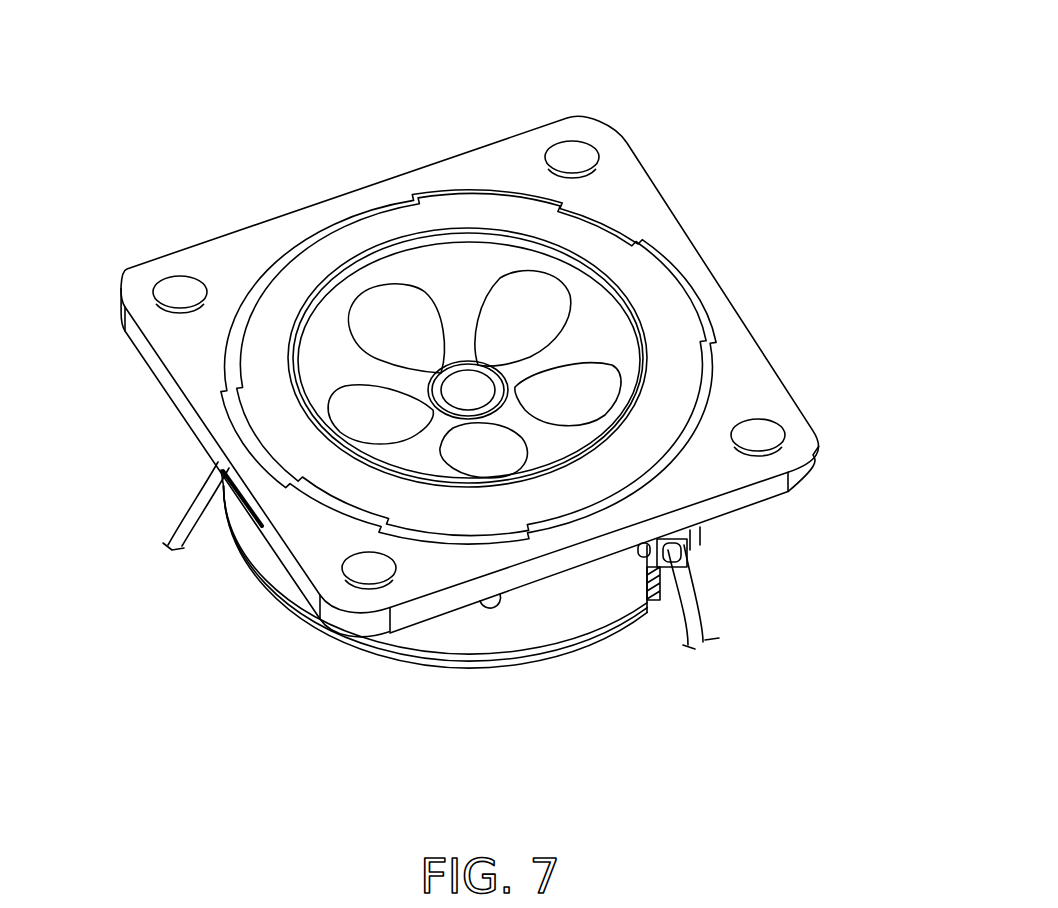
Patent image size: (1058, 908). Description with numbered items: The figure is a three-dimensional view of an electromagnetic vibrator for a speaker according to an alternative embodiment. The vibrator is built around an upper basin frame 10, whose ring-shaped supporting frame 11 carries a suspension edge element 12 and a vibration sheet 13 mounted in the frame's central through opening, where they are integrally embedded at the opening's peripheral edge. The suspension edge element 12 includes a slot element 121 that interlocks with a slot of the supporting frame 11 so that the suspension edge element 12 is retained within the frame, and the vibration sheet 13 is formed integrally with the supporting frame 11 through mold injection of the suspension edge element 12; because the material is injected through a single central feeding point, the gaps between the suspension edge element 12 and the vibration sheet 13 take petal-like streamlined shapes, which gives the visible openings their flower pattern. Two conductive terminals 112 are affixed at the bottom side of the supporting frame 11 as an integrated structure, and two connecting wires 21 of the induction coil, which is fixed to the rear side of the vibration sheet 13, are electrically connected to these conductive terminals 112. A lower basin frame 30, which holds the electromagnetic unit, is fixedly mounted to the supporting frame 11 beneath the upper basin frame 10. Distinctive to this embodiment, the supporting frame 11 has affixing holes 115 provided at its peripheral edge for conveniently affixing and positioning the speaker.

The upper basin frame 10 is at (501, 399).
The supporting frame 11 is at (717, 480).
The suspension edge element 12 is at (463, 257).
The vibration sheet 13 is at (538, 293).
The connecting wires 21 is at (188, 507).
The lower basin frame 30 is at (528, 625).
The conductive terminals 112 is at (682, 541).
The affixing hole 115 is at (574, 152).
The slot element 121 is at (273, 264).